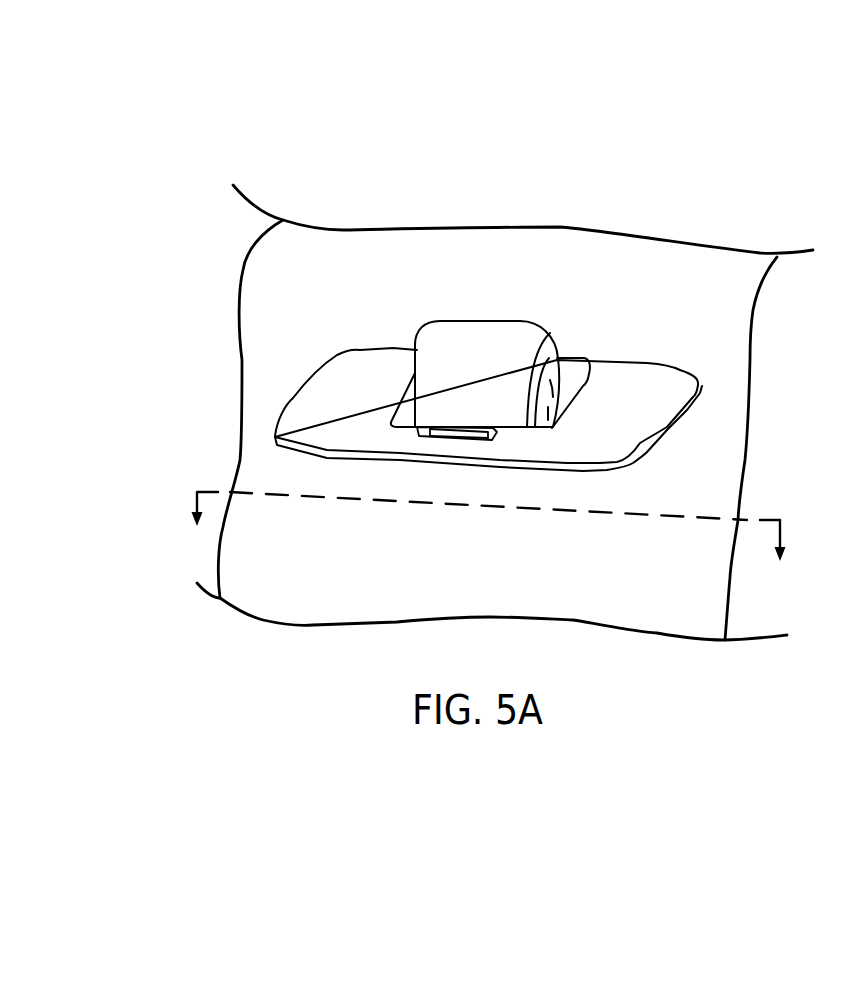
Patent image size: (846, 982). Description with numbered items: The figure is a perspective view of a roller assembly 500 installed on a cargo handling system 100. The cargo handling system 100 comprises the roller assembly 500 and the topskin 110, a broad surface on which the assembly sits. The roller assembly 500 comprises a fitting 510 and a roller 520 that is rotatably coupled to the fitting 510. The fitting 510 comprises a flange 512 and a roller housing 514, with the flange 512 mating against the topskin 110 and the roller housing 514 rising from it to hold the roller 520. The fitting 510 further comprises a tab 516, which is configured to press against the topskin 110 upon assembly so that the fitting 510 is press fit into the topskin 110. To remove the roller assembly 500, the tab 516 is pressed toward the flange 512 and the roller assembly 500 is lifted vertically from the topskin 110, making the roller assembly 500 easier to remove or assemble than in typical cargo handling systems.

The cargo handling system 100 is at (368, 101).
The topskin 110 is at (359, 558).
The roller assembly 500 is at (473, 154).
The fitting 510 is at (314, 420).
The flange 512 is at (373, 393).
The roller housing 514 is at (574, 387).
The tab 516 is at (497, 432).
The roller 520 is at (470, 354).